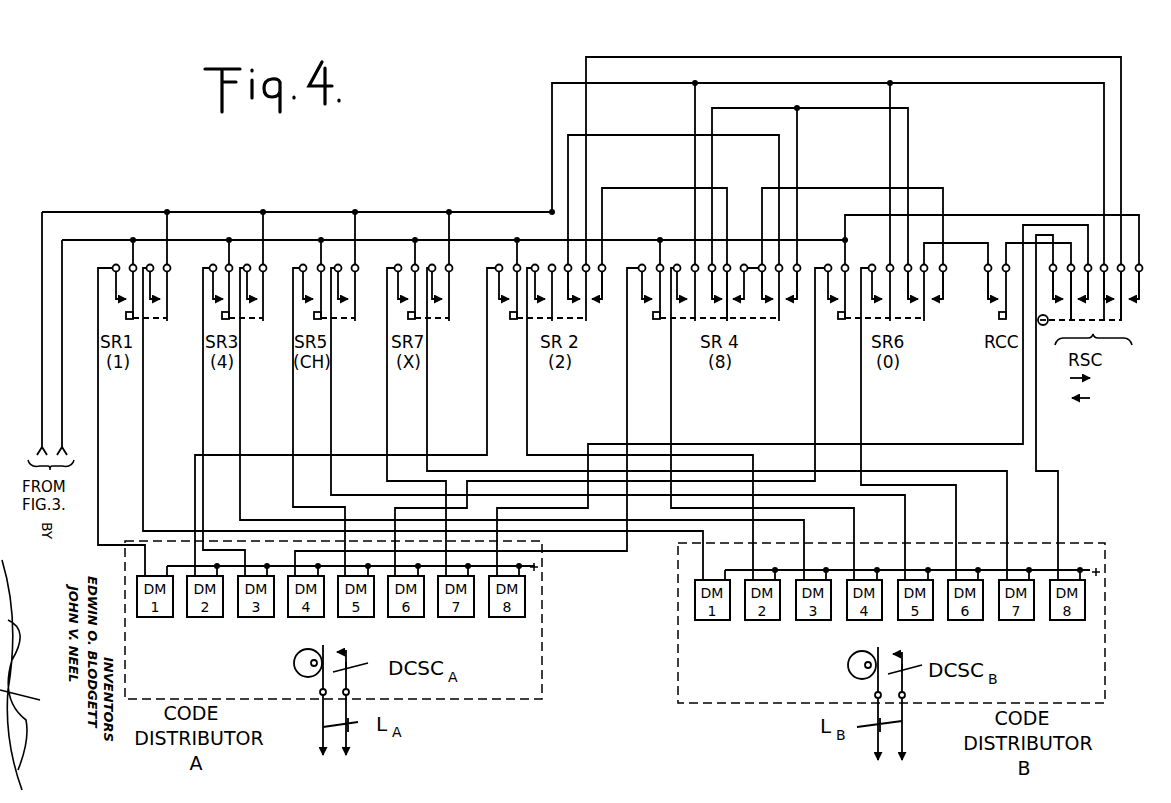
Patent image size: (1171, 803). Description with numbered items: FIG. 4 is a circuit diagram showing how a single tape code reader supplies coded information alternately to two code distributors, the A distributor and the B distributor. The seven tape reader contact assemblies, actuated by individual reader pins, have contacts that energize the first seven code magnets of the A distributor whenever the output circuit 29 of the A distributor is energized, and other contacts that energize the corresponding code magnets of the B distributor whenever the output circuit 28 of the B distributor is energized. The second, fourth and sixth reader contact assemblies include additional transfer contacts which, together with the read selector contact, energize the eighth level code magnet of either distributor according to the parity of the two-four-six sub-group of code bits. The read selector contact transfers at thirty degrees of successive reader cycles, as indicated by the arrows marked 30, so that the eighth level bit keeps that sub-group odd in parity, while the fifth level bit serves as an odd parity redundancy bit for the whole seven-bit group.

The output circuit of the B distributor 28 is at (42, 426).
The output circuit of the A distributor 29 is at (62, 394).
The 30 degree rotation indication of RSC 30 is at (1097, 388).